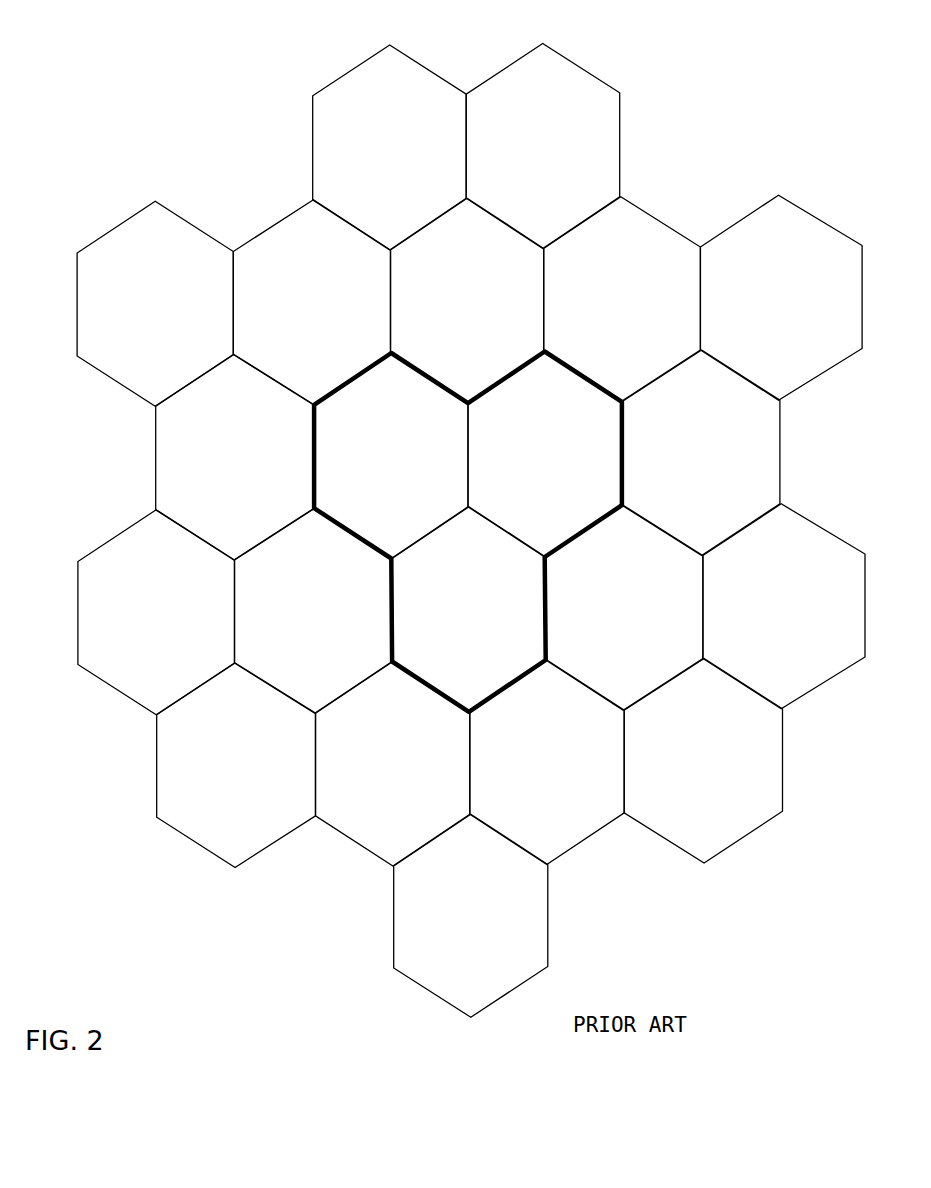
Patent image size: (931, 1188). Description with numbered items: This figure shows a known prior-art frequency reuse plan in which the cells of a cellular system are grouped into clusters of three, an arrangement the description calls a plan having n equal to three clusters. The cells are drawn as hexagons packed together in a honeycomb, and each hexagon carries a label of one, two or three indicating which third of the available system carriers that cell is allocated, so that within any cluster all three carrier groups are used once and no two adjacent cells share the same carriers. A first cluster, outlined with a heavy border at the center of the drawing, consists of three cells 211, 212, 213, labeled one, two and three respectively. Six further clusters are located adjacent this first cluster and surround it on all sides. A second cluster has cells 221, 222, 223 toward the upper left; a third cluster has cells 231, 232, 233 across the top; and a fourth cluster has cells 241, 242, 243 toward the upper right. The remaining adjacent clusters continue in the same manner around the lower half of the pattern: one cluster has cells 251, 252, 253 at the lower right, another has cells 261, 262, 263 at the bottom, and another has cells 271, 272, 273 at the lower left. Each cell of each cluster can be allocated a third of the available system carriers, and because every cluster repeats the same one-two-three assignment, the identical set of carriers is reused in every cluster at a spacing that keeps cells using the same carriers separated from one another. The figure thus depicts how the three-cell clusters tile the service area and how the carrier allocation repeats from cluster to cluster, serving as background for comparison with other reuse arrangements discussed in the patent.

The cell of first cluster 211 is at (406, 546).
The cell of first cluster 212 is at (560, 544).
The cell of first cluster 213 is at (484, 699).
The cell of second cluster 221 is at (170, 393).
The cell of second cluster 222 is at (328, 392).
The cell of second cluster 223 is at (249, 547).
The cell of third cluster 231 is at (405, 237).
The cell of third cluster 232 is at (558, 236).
The cell of third cluster 233 is at (482, 390).
The cell of fourth cluster 241 is at (636, 389).
The cell of fourth cluster 242 is at (794, 387).
The cell of fourth cluster 243 is at (717, 542).
The cell of fifth cluster 251 is at (638, 697).
The cell of fifth cluster 252 is at (796, 696).
The cell of fifth cluster 253 is at (719, 850).
The cell of sixth cluster 261 is at (408, 853).
The cell of sixth cluster 262 is at (562, 852).
The cell of sixth cluster 263 is at (486, 1004).
The cell of seventh cluster 271 is at (171, 702).
The cell of seventh cluster 272 is at (330, 700).
The cell of seventh cluster 273 is at (250, 854).